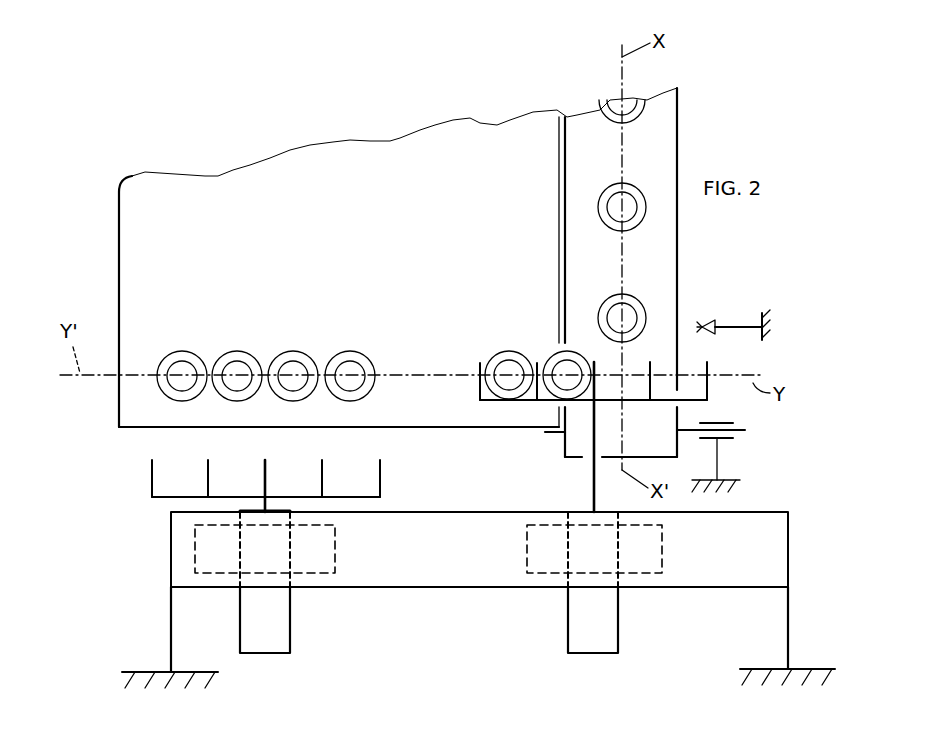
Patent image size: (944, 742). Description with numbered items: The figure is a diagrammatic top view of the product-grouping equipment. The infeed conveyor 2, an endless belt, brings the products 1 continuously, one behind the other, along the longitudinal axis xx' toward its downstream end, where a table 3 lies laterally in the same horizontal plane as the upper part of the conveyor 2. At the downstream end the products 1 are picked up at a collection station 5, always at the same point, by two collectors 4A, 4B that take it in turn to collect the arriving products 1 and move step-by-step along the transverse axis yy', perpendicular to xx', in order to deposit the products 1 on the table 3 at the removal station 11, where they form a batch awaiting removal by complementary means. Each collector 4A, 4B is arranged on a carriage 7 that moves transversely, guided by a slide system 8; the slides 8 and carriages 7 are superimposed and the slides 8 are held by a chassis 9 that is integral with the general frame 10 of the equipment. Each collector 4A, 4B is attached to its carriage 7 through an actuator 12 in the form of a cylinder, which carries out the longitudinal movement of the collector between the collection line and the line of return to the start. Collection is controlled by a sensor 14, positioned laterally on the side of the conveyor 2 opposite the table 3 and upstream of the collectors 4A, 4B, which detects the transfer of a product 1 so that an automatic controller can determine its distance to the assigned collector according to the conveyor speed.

The products 1 is at (560, 366).
The infeed conveyor 2 is at (660, 128).
The table 3 is at (348, 233).
The collection station 5 is at (617, 370).
The carriage 7 is at (335, 550).
The slide system 8 is at (467, 570).
The chassis 9 is at (171, 625).
The general frame 10 is at (770, 333).
The removal station 11 is at (380, 345).
The actuator 12 is at (267, 636).
The sensor 14 is at (740, 326).
The collector 4A is at (717, 402).
The collector 4B is at (150, 498).